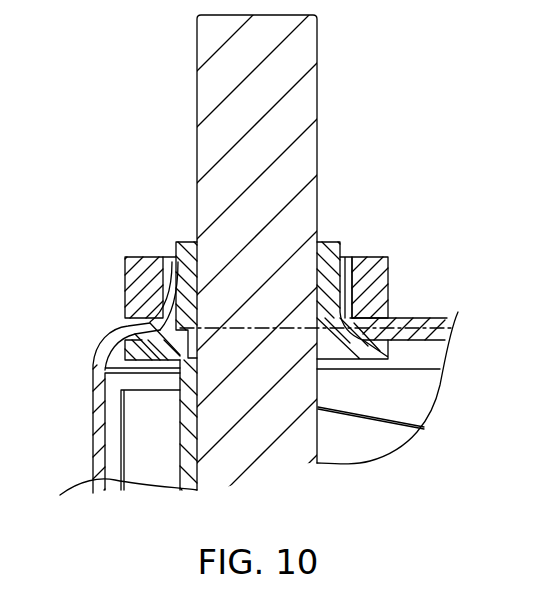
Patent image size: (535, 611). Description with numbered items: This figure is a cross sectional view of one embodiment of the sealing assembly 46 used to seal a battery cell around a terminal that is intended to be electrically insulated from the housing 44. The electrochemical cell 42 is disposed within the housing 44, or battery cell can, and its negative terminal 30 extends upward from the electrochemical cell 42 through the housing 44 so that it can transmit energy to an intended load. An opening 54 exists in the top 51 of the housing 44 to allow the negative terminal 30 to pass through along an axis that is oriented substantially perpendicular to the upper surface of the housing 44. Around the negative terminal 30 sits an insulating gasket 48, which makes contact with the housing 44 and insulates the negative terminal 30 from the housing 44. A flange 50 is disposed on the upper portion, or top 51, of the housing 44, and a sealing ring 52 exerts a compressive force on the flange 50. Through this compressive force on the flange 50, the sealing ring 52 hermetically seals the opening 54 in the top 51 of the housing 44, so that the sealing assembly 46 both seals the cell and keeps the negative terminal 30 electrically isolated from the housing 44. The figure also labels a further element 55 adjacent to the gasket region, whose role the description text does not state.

The negative terminal 30 is at (300, 108).
The electrochemical cell 42 is at (373, 441).
The housing 44 is at (102, 397).
The sealing assembly 46 is at (177, 210).
The insulating gasket 48 is at (326, 258).
The flange 50 is at (348, 282).
The top 51 is at (415, 331).
The sealing ring 52 is at (365, 280).
The opening 54 is at (293, 336).
The seal 55 is at (172, 298).